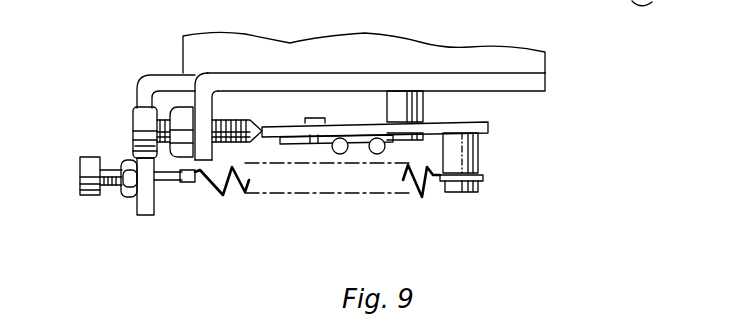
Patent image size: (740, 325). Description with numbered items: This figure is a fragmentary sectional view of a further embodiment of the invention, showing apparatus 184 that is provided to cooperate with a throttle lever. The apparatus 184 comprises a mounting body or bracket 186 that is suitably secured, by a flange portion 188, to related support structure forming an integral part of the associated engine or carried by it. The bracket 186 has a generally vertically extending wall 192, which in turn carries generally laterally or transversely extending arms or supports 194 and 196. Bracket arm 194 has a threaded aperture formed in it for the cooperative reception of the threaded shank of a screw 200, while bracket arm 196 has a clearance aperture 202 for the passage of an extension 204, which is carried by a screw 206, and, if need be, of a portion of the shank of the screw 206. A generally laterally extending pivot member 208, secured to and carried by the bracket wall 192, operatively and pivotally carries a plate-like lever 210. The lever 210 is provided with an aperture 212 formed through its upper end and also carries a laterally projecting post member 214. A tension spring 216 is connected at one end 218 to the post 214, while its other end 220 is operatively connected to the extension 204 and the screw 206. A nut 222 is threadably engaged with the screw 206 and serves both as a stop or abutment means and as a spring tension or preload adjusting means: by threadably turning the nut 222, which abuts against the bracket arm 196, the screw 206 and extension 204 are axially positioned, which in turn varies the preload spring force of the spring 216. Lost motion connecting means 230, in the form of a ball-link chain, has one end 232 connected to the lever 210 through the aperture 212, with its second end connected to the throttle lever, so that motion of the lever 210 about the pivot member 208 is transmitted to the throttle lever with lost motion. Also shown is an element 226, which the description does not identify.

The apparatus 184 is at (560, 147).
The mounting body or bracket 186 is at (552, 82).
The flange portion 188 is at (522, 56).
The vertically extending wall 192 is at (477, 72).
The bracket arm 194 is at (215, 101).
The bracket arm 196 is at (140, 216).
The screw 200 is at (143, 119).
The clearance aperture 202 is at (130, 162).
The extension 204 is at (169, 181).
The screw 206 is at (80, 164).
The pivot member 208 is at (420, 100).
The plate-like lever 210 is at (496, 127).
The aperture 212 is at (302, 130).
The post member 214 is at (465, 160).
The tension spring 216 is at (418, 200).
The spring end 218 is at (482, 180).
The spring end 220 is at (192, 183).
The nut 222 is at (130, 196).
The threaded rod 226 is at (263, 130).
The lost motion connecting means 230 is at (340, 160).
The chain end 232 is at (322, 117).